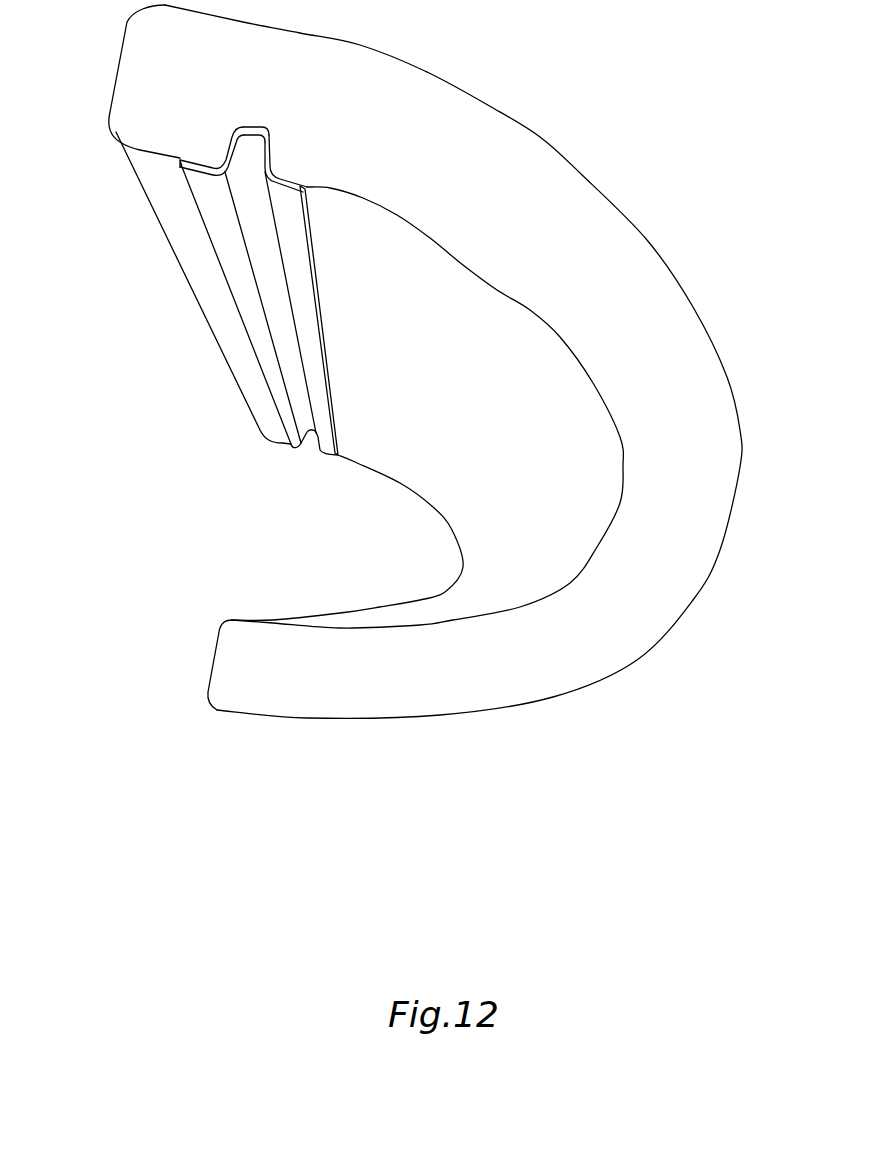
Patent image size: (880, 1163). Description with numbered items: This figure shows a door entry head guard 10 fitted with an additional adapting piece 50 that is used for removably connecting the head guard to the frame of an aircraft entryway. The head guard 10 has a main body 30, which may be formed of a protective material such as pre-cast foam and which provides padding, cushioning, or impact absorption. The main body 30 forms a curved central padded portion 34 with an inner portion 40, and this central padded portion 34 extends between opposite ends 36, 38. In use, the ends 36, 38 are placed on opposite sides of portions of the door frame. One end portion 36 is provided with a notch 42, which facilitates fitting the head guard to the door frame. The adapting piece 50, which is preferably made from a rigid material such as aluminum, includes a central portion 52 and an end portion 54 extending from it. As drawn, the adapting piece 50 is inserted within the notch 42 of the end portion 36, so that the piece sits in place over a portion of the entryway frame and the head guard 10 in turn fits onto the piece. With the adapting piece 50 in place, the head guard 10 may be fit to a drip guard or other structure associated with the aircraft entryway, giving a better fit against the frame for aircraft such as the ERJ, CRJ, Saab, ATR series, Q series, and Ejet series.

The door entry head guard 10 is at (429, 359).
The main body 30 is at (235, 45).
The central padded portion 34 is at (741, 431).
The end portion 36 is at (117, 72).
The end portion 38 is at (197, 162).
The inner portion 40 is at (474, 566).
The notch 42 is at (274, 153).
The adapting piece 50 is at (255, 139).
The central portion 52 is at (261, 128).
The end portion 54 is at (295, 183).